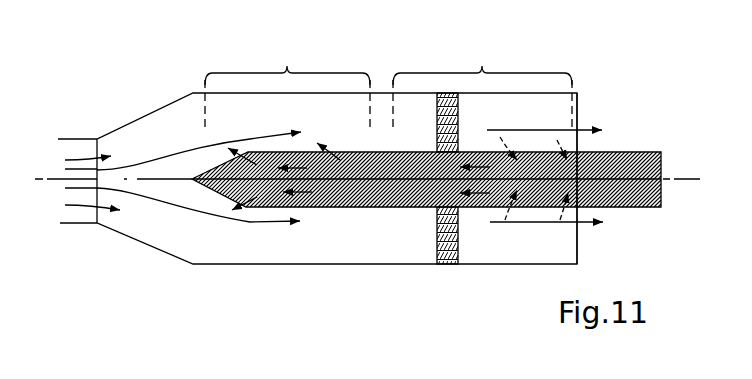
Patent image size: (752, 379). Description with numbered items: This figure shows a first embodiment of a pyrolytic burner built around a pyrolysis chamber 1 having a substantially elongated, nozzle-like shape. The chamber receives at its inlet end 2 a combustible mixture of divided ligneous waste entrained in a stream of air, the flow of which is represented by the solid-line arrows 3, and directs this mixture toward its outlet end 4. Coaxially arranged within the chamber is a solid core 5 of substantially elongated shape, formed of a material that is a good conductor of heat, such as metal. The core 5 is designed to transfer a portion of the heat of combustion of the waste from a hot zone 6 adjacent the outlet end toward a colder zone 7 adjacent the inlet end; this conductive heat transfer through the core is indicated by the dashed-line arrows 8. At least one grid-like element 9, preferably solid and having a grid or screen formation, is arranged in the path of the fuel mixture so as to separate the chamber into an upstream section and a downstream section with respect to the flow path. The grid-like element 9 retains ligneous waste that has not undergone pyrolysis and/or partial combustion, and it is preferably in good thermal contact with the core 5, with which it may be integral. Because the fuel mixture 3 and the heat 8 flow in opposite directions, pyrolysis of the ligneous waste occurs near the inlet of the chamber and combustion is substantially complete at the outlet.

The pyrolysis chamber 1 is at (215, 267).
The inlet end 2 is at (63, 147).
The combustible mixture flow arrows 3 is at (122, 164).
The outlet end 4 is at (578, 118).
The solid core 5 is at (637, 160).
The hot zone 6 is at (483, 66).
The colder zone 7 is at (287, 65).
The heat transfer arrows 8 is at (518, 196).
The grid-like element 9 is at (436, 250).